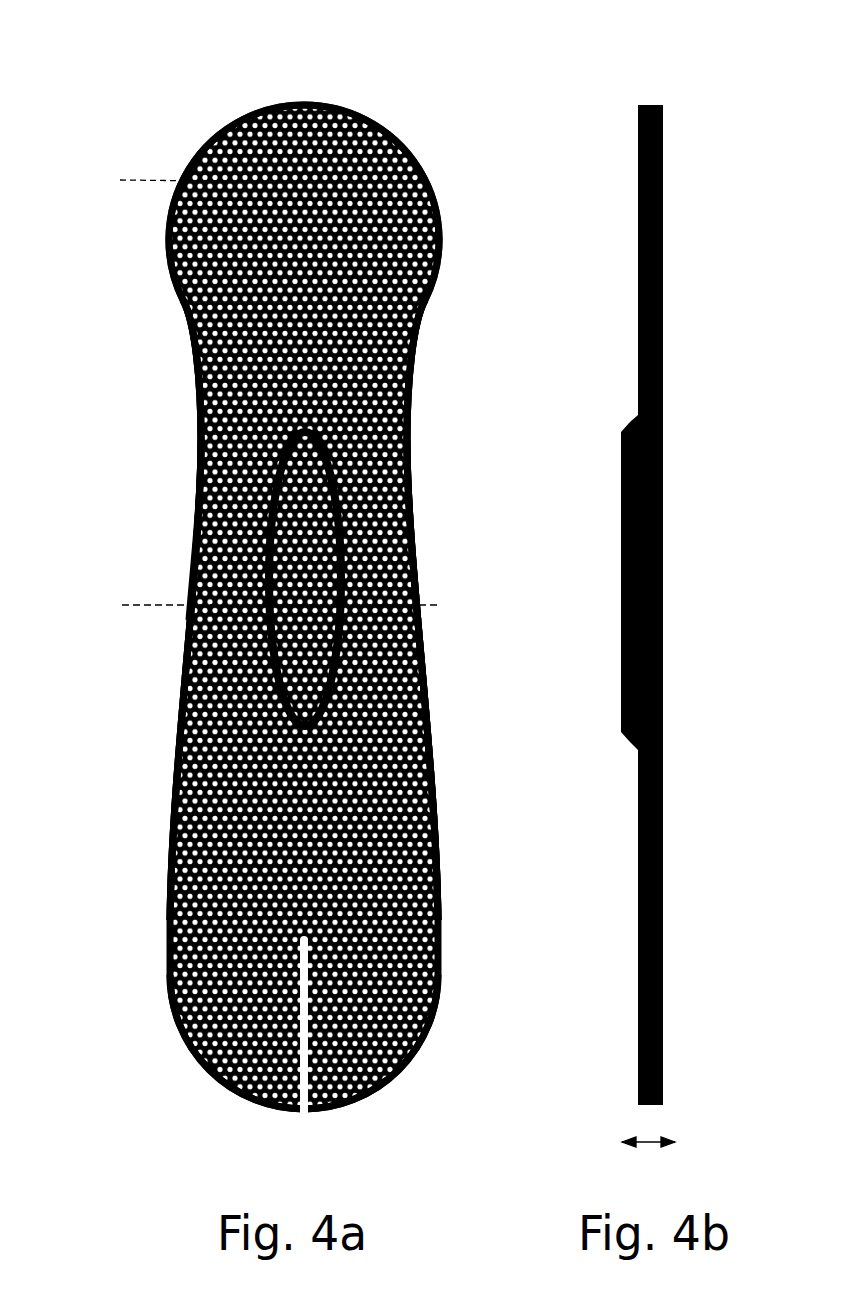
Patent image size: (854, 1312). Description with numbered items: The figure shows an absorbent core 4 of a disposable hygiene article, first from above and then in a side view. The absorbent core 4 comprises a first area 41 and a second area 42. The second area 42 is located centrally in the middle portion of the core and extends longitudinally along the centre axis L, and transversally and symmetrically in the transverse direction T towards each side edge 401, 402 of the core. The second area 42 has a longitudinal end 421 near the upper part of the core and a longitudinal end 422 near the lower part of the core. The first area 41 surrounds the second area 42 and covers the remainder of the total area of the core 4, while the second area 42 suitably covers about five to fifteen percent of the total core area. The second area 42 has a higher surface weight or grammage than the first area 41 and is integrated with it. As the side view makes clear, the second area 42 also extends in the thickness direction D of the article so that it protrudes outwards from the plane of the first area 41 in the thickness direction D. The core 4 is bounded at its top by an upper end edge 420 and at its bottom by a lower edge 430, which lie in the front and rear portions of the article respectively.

In FIG. 4A, the absorbent core 4 is at (178, 324).
In FIG. 4B, the absorbent core 4 is at (615, 302).
In FIG. 4A, the first area 41 is at (182, 719).
In FIG. 4B, the first area 41 is at (620, 582).
In FIG. 4A, the second area 42 is at (363, 579).
In FIG. 4B, the second area 42 is at (638, 775).
In FIG. 4A, the side edge 401 is at (198, 458).
In FIG. 4A, the side edge 402 is at (412, 443).
In FIG. 4A, the upper end edge 420 is at (331, 104).
In FIG. 4A, the longitudinal end 421 is at (200, 401).
In FIG. 4A, the longitudinal end 422 is at (428, 723).
In FIG. 4A, the lower edge 430 is at (283, 1106).
In FIG. 4A, the centre axis L is at (200, 176).
In FIG. 4A, the transverse direction T is at (138, 606).
In FIG. 4B, the thickness direction D is at (642, 1140).